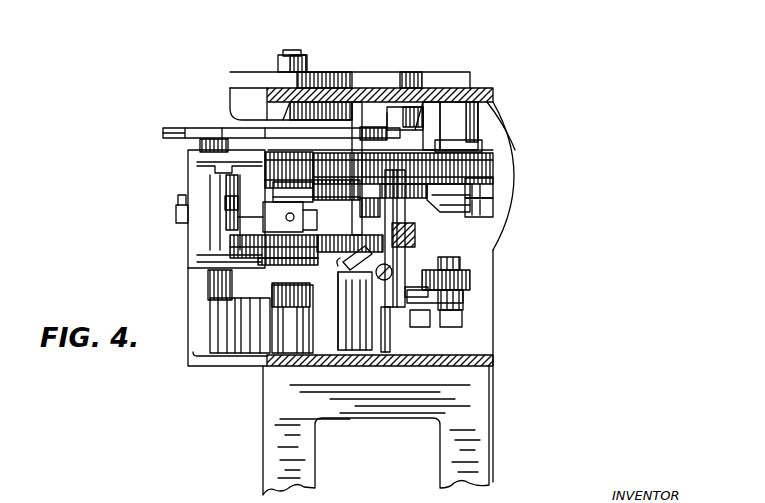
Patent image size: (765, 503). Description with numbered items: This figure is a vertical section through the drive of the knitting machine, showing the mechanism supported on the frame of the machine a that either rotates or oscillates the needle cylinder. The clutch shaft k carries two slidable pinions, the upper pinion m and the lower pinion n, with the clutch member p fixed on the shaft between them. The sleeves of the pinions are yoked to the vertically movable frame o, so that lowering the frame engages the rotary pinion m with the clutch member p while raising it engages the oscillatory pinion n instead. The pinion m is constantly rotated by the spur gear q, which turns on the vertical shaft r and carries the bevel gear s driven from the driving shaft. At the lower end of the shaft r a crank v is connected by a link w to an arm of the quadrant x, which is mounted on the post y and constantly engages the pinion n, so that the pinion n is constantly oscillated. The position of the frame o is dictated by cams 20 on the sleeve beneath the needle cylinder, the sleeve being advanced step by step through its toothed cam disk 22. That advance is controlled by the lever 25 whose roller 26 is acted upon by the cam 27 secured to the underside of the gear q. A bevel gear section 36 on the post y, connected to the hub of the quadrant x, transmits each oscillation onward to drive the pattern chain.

The clutch shaft k is at (285, 130).
The cam disk 22 is at (202, 129).
The frame o is at (190, 161).
The upper pinion m is at (272, 170).
The spur gear q is at (497, 165).
The cams 20 is at (360, 185).
The vertical shaft r is at (413, 130).
The bevel gear s is at (480, 149).
The roller 26 is at (495, 188).
The lever 25 is at (490, 215).
The cam 27 is at (432, 180).
The clutch member p is at (272, 218).
The lower pinion n is at (255, 260).
The quadrant x is at (355, 298).
The bevel gear section 36 is at (389, 338).
The post y is at (350, 308).
The crank v is at (470, 278).
The link w is at (463, 305).
The frame of the machine a is at (493, 388).